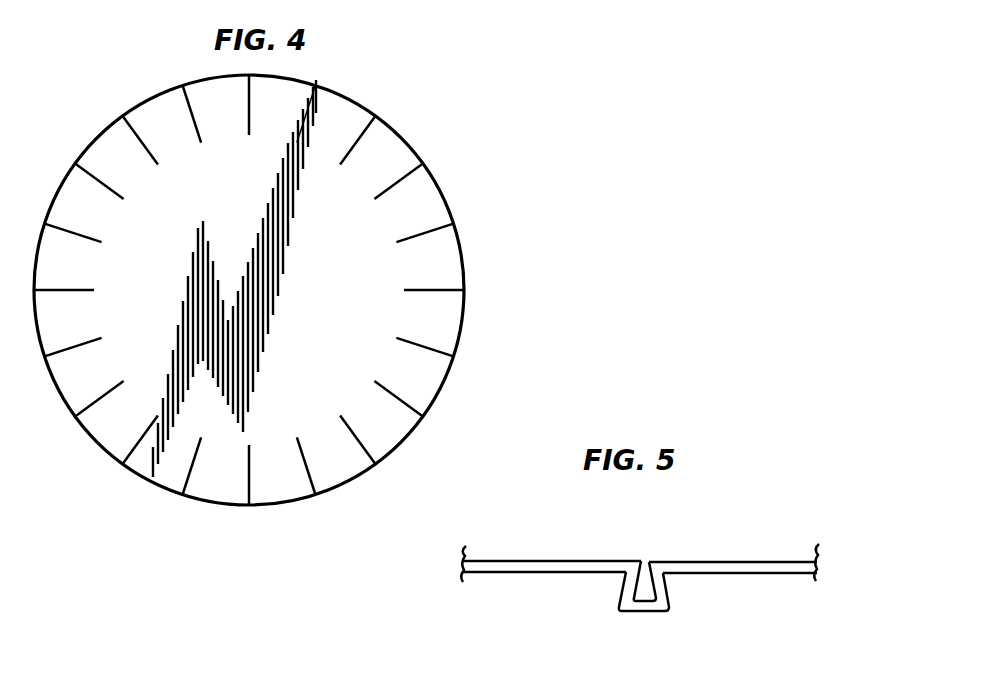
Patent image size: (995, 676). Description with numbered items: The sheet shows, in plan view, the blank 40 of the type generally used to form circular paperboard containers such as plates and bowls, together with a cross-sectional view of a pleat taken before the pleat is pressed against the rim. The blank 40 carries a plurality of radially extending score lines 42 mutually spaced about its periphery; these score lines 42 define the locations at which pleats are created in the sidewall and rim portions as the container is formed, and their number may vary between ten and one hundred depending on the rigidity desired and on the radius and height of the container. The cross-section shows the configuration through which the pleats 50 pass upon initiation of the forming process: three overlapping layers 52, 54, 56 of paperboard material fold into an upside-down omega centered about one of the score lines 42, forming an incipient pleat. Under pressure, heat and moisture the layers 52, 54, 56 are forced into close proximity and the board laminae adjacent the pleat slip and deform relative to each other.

In FIG. 4, the blank 40 is at (275, 290).
In FIG. 4, the score lines 42 is at (425, 282).
In FIG. 5, the pleats 50 is at (640, 574).
In FIG. 5, the overlapping layer 52 is at (635, 551).
In FIG. 5, the overlapping layer 54 is at (610, 583).
In FIG. 5, the overlapping layer 56 is at (623, 606).